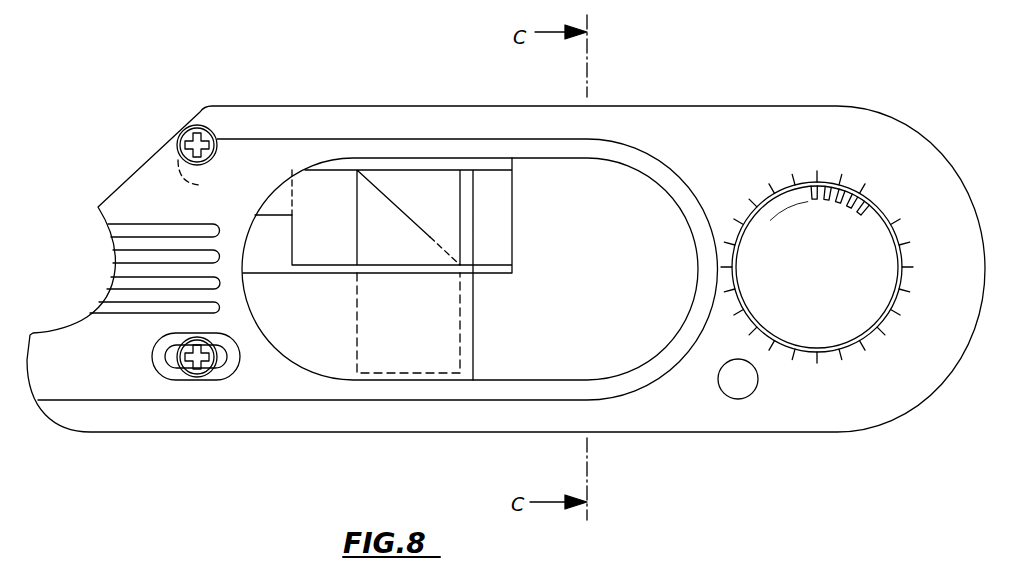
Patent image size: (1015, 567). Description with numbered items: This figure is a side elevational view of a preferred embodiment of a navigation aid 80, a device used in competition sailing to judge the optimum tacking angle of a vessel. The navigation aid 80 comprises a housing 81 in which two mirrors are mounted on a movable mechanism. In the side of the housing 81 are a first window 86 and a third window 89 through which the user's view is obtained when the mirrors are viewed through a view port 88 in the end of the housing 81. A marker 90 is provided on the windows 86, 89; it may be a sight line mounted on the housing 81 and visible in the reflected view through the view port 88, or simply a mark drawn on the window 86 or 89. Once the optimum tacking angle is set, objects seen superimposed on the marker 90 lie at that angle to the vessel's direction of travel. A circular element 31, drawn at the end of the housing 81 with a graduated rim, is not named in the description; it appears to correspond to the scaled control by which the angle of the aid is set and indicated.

The navigation aid 80 is at (341, 88).
The housing 81 is at (277, 422).
The first window 86 is at (482, 190).
The view port 88 is at (112, 262).
The third window 89 is at (633, 185).
The marker 90 is at (474, 358).
The adjustment dial 31 is at (882, 208).